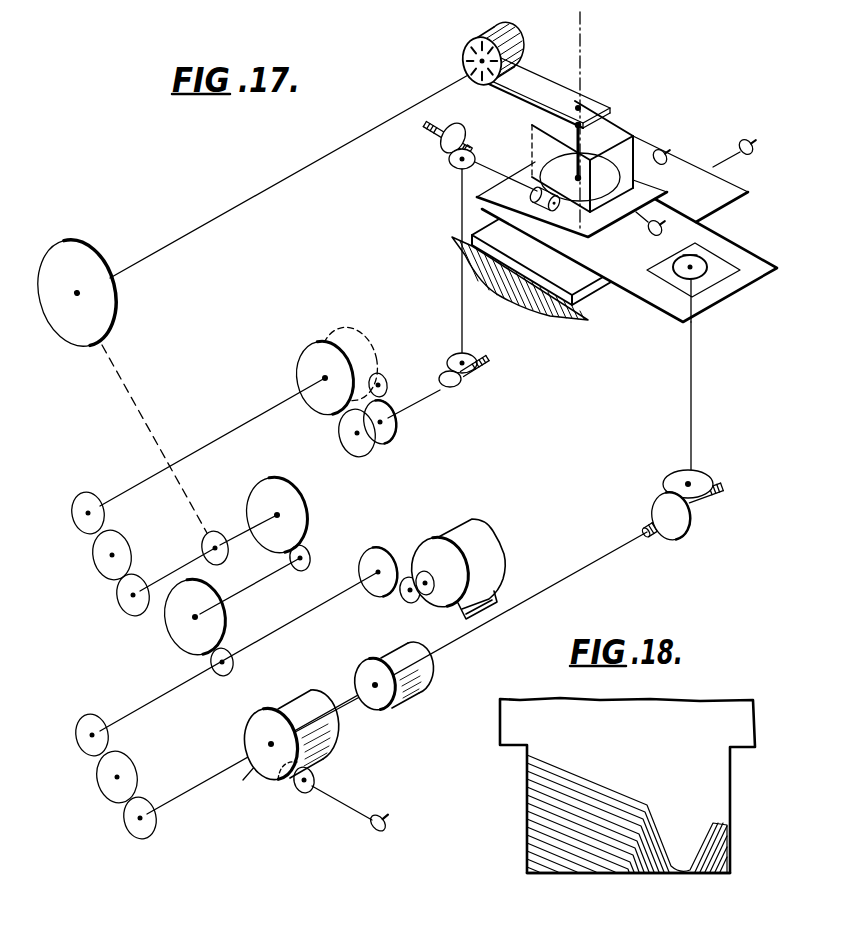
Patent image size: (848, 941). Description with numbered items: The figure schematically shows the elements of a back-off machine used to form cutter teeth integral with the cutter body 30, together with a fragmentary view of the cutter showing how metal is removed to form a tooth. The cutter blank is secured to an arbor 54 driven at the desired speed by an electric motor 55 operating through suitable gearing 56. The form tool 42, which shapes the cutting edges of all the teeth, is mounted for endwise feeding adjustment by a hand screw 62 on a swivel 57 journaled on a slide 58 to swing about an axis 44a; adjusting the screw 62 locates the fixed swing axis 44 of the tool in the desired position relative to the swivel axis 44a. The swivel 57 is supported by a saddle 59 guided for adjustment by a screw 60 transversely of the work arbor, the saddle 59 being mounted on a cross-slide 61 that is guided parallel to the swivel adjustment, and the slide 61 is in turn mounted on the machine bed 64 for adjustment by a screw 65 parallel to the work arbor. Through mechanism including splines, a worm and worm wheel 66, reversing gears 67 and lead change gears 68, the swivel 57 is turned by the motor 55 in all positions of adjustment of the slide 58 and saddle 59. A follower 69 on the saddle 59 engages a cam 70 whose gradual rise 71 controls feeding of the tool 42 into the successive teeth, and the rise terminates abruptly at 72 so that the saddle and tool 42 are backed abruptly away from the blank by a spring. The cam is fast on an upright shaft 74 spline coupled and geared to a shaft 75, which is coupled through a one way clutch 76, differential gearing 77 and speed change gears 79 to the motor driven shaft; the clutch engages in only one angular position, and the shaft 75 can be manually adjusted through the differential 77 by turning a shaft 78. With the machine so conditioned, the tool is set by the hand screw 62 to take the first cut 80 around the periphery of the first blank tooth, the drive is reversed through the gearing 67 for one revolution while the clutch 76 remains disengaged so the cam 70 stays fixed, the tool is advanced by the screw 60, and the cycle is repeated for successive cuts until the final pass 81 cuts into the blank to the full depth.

In FIG. 18, the body 30 is at (613, 712).
In FIG. 17, the form tool 42 is at (543, 88).
In FIG. 17, the fixed axis 44 is at (577, 56).
In FIG. 17, the swivel axis 44a is at (570, 155).
In FIG. 17, the arbor 54 is at (330, 148).
In FIG. 17, the electric motor 55 is at (470, 540).
In FIG. 17, the gearing 56 is at (316, 543).
In FIG. 17, the swivel 57 is at (610, 118).
In FIG. 17, the slide 58 is at (662, 185).
In FIG. 17, the saddle 59 is at (720, 238).
In FIG. 17, the screw 60 is at (638, 217).
In FIG. 17, the cross-slide 61 is at (588, 292).
In FIG. 17, the hand screw 62 is at (654, 146).
In FIG. 17, the machine bed 64 is at (557, 312).
In FIG. 17, the screw 65 is at (722, 157).
In FIG. 17, the worm and worm wheel 66 is at (528, 184).
In FIG. 17, the reversing gears 67 is at (384, 364).
In FIG. 17, the lead change gears 68 is at (84, 549).
In FIG. 17, the follower 69 is at (672, 262).
In FIG. 17, the cam 70 is at (703, 277).
In FIG. 17, the gradual rise 71 is at (677, 282).
In FIG. 17, the abrupt termination of cam rise 72 is at (681, 258).
In FIG. 17, the upright shaft 74 is at (693, 373).
In FIG. 17, the shaft 75 is at (551, 583).
In FIG. 17, the one way clutch 76 is at (424, 672).
In FIG. 17, the differential gearing 77 is at (333, 743).
In FIG. 17, the shaft 78 is at (340, 803).
In FIG. 17, the speed change gears 79 is at (84, 761).
In FIG. 18, the first cut 80 is at (528, 876).
In FIG. 18, the final pass 81 is at (600, 783).